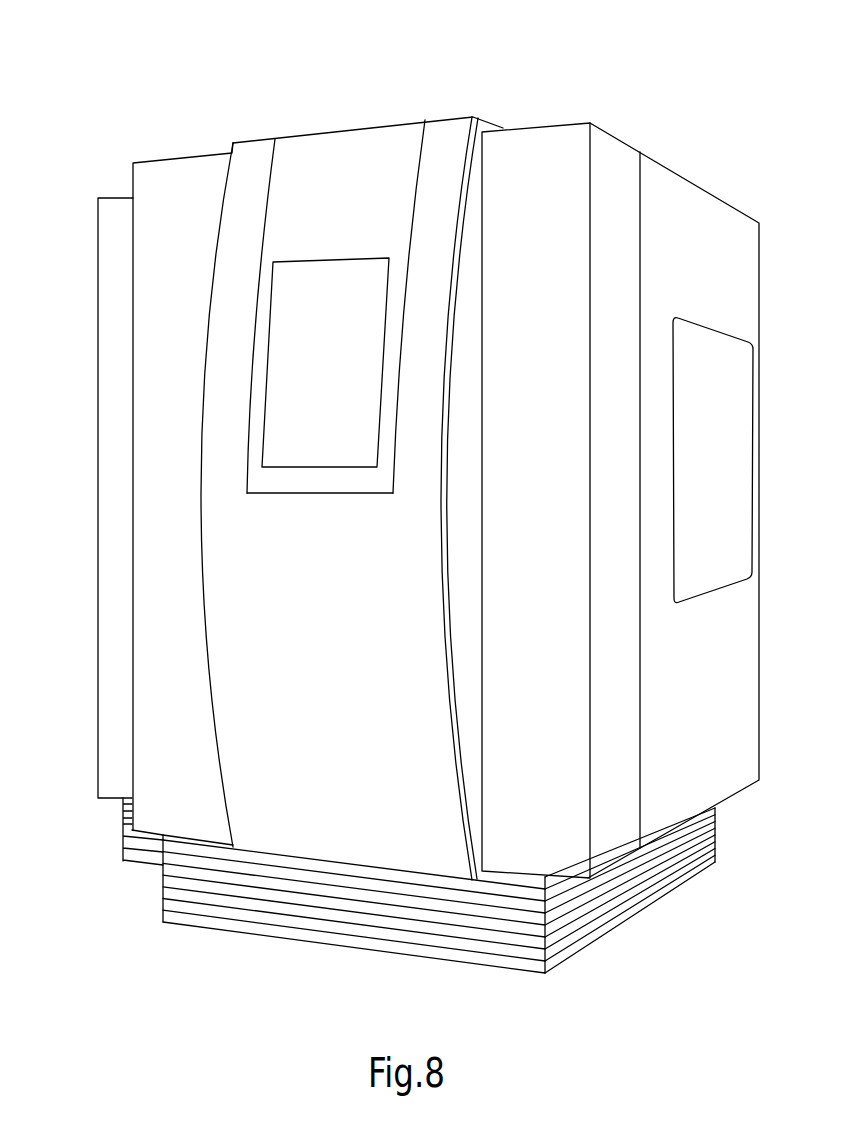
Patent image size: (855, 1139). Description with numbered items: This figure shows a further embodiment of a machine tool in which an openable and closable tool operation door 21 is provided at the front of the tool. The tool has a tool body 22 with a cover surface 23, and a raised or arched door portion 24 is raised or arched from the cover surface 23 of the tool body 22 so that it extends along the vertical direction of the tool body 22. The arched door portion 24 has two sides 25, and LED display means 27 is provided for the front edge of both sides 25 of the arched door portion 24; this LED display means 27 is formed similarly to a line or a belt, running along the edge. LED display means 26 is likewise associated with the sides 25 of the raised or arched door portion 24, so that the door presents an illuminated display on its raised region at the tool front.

The tool operation door 21 is at (332, 116).
The tool body 22 is at (620, 454).
The cover surface 23 is at (537, 143).
The raised or arched door portion 24 is at (433, 133).
The sides of the arched door portion 25 is at (233, 143).
The LED display means 26 is at (205, 365).
The LED display means 27 is at (467, 152).